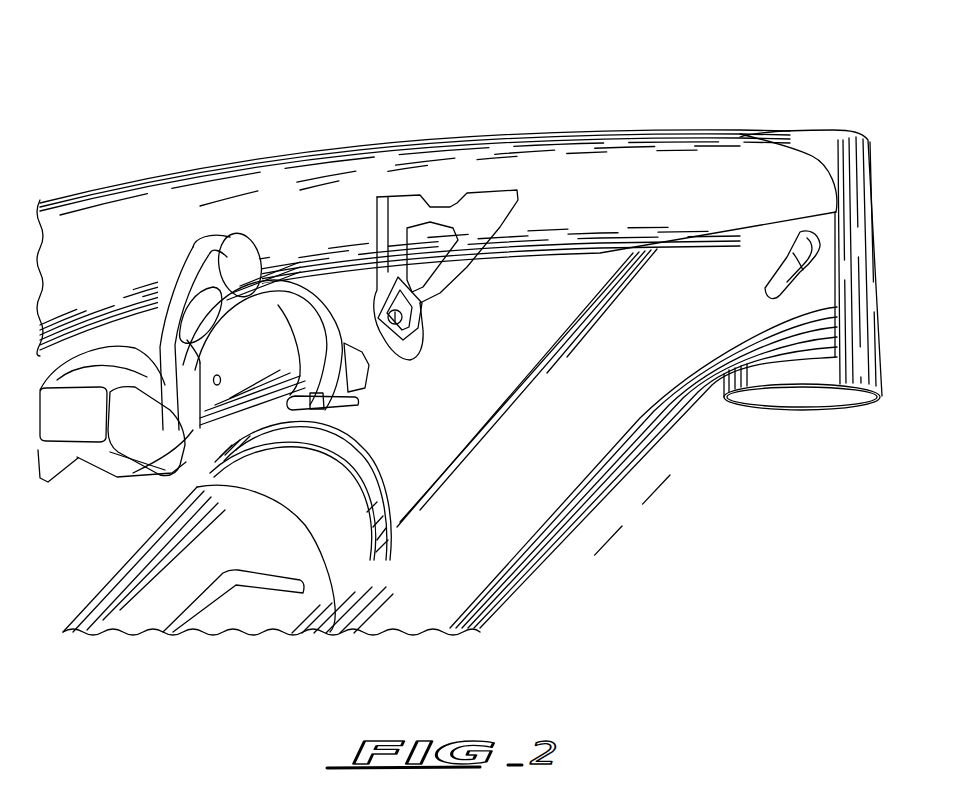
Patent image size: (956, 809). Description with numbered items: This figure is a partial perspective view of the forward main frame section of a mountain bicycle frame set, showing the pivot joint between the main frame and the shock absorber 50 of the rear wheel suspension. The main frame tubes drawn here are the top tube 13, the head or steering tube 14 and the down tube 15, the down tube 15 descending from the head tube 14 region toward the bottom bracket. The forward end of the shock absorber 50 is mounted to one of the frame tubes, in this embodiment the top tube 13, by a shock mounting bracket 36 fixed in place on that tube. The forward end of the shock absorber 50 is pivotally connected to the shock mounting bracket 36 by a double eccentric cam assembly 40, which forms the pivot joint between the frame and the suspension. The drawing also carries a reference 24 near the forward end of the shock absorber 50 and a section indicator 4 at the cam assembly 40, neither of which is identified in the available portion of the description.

The top tube 13 is at (492, 130).
The head or steering tube 14 is at (792, 413).
The down tube 15 is at (567, 497).
The clamp 24 is at (162, 288).
The shock mounting bracket 36 is at (438, 273).
The double eccentric cam assembly 40 is at (417, 332).
The shock absorber 50 is at (313, 362).
The section line 4- 4 is at (414, 295).